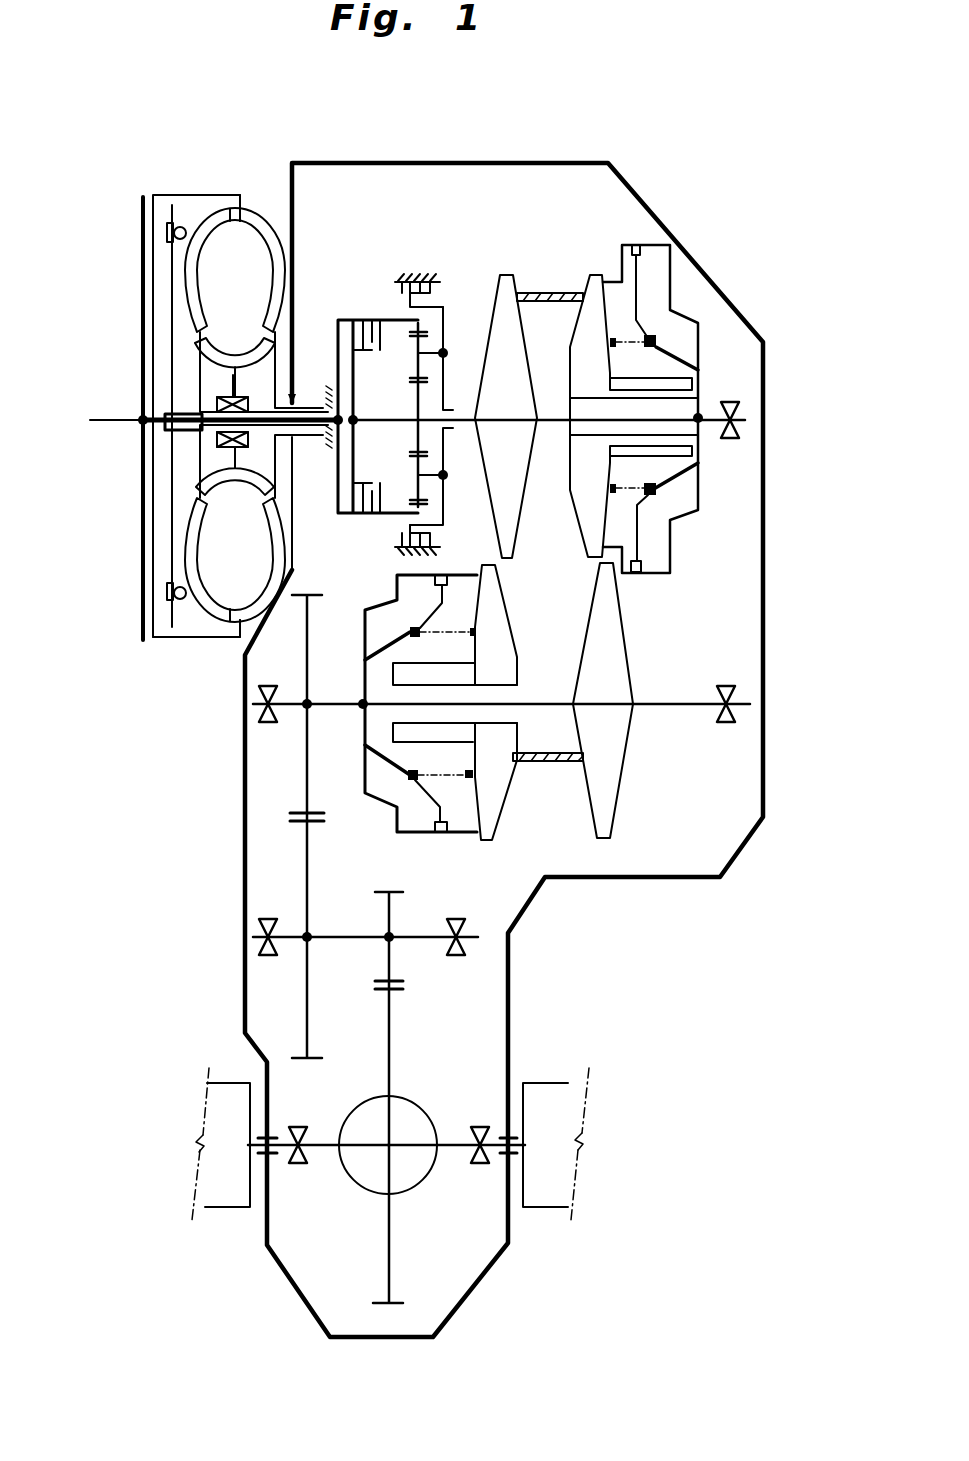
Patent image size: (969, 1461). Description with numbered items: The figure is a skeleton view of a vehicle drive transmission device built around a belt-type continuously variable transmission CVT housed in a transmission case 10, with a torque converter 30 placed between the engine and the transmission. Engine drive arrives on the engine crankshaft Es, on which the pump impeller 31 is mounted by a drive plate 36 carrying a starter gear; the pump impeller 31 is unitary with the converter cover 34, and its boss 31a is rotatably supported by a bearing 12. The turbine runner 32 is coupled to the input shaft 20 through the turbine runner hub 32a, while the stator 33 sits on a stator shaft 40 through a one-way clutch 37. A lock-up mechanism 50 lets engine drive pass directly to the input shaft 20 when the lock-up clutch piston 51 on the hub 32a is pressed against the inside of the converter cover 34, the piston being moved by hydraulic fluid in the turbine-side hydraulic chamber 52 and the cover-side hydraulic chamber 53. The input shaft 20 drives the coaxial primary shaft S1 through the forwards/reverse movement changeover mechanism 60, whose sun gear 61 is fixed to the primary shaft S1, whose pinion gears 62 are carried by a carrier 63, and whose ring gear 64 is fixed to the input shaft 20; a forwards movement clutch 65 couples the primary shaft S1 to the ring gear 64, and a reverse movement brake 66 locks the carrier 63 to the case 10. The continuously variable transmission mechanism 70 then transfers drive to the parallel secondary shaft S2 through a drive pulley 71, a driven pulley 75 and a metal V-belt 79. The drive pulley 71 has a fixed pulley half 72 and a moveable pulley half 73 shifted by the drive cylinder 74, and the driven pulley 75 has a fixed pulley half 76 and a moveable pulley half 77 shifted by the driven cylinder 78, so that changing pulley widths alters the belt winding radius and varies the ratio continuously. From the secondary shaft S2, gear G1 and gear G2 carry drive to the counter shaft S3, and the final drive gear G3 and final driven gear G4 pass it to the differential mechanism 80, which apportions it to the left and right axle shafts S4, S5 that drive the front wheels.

The transmission case 10 is at (433, 163).
The bearing 12 is at (287, 442).
The input shaft 20 is at (204, 411).
The torque converter 30 is at (260, 198).
The pump impeller 31 is at (288, 247).
The boss of the pump impeller 31a is at (308, 410).
The turbine runner 32 is at (232, 208).
The turbine runner hub 32a is at (182, 440).
The stator 33 is at (233, 346).
The converter cover 34 is at (152, 322).
The drive plate 36 is at (142, 232).
The one-way clutch 37 is at (259, 409).
The stator shaft 40 is at (317, 433).
The lock-up mechanism 50 is at (163, 617).
The lock-up clutch piston 51 is at (170, 290).
The hydraulic chamber on the turbine side 52 is at (198, 208).
The hydraulic chamber on the cover side 53 is at (163, 355).
The forwards/reverse movement changeover mechanism 60 is at (385, 245).
The sun gear 61 is at (418, 408).
The pinion gears 62 is at (413, 367).
The carrier 63 is at (445, 340).
The ring gear 64 is at (390, 318).
The forwards movement clutch 65 is at (352, 522).
The reverse movement brake 66 is at (436, 268).
The continuously variable transmission mechanism 70 is at (692, 553).
The drive pulley 71 is at (551, 230).
The fixed pulley half 72 is at (524, 264).
The moveable pulley half 73 is at (583, 281).
The drive cylinder 74 is at (623, 305).
The driven pulley 75 is at (636, 805).
The fixed pulley half 76 is at (594, 815).
The moveable pulley half 77 is at (501, 812).
The driven cylinder 78 is at (450, 795).
The belt 79 is at (566, 596).
The differential mechanism 80 is at (351, 1195).
The engine crankshaft Es is at (108, 420).
The primary shaft S1 is at (460, 415).
The secondary shaft S2 is at (688, 702).
The counter shaft S3 is at (347, 920).
The left axle shaft S4 is at (324, 1140).
The right axle shaft S5 is at (448, 1142).
The gear G1 is at (306, 760).
The gear G2 is at (306, 872).
The final drive gear G3 is at (395, 918).
The final driven gear G4 is at (394, 1040).
The belt-type continuously variable transmission CVT is at (630, 226).